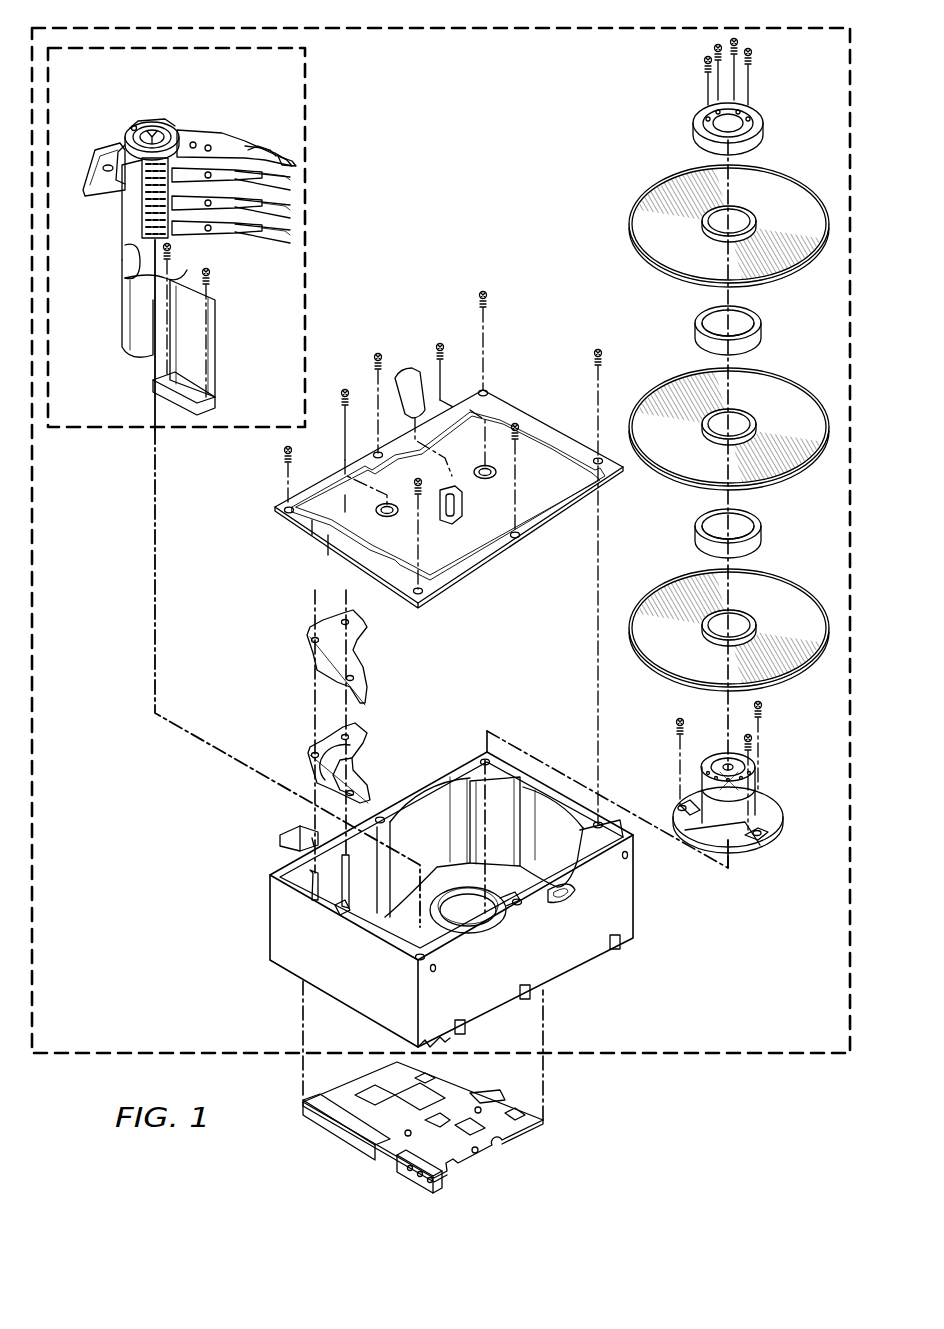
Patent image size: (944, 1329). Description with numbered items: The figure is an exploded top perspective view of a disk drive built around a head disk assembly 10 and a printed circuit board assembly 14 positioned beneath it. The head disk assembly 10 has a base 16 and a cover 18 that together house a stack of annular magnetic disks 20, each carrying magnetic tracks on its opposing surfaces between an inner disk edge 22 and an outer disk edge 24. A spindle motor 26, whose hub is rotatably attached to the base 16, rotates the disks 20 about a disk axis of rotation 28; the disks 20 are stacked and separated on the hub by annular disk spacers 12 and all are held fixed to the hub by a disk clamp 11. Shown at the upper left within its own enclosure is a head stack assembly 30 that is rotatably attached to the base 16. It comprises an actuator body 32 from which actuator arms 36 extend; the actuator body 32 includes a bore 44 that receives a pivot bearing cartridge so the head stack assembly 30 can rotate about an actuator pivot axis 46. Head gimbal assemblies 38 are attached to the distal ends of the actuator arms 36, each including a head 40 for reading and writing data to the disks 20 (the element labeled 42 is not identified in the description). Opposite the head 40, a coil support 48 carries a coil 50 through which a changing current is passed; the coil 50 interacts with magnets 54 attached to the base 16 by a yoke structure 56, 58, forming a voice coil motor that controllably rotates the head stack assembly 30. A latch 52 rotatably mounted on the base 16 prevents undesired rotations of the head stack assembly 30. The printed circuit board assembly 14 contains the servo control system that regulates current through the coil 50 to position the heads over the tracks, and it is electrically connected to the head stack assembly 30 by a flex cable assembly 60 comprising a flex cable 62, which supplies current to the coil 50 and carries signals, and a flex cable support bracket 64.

The head disk assembly 10 is at (637, 1056).
The disk clamp 11 is at (760, 106).
The annular disk spacer 12 is at (692, 340).
The printed circuit board assembly 14 is at (545, 1128).
The base 16 is at (580, 958).
The cover 18 is at (493, 388).
The annular magnetic disk 20 is at (782, 168).
The inner disk edge 22 is at (755, 215).
The outer disk edge 24 is at (670, 280).
The spindle motor 26 is at (772, 840).
The disk axis of rotation 28 is at (722, 868).
The head stack assembly 30 is at (113, 432).
The actuator body 32 is at (145, 125).
The actuator arm 36 is at (194, 130).
The head gimbal assembly 38 is at (240, 142).
The head 40 is at (300, 232).
The read/write head 42 is at (268, 153).
The bore 44 is at (160, 128).
The actuator pivot axis 46 is at (245, 768).
The coil support 48 is at (90, 155).
The coil 50 is at (122, 146).
The latch 52 is at (278, 840).
The magnet 54 is at (312, 768).
The yoke structure 56 is at (310, 655).
The yoke structure 58 is at (356, 782).
The flex cable assembly 60 is at (118, 244).
The flex cable 62 is at (125, 345).
The flex cable support bracket 64 is at (218, 350).